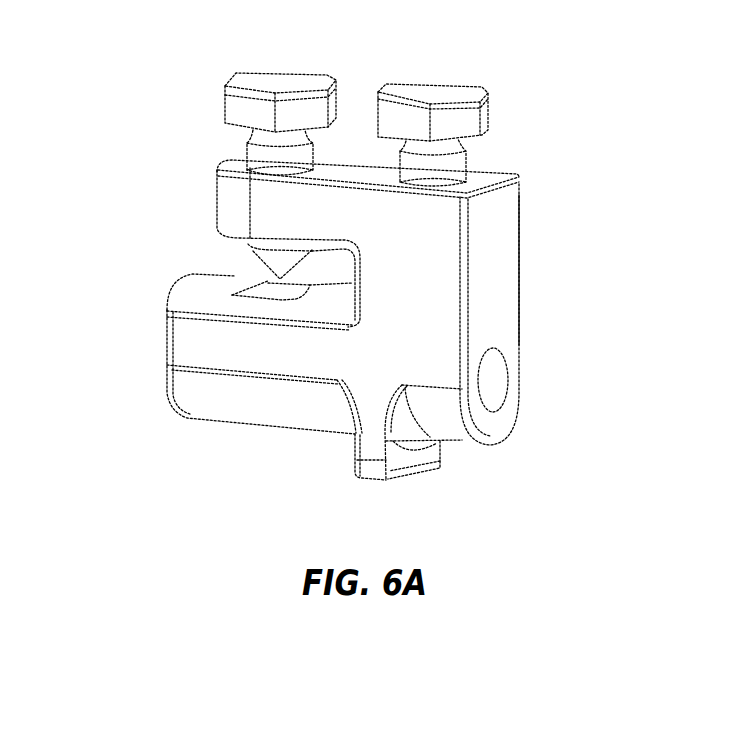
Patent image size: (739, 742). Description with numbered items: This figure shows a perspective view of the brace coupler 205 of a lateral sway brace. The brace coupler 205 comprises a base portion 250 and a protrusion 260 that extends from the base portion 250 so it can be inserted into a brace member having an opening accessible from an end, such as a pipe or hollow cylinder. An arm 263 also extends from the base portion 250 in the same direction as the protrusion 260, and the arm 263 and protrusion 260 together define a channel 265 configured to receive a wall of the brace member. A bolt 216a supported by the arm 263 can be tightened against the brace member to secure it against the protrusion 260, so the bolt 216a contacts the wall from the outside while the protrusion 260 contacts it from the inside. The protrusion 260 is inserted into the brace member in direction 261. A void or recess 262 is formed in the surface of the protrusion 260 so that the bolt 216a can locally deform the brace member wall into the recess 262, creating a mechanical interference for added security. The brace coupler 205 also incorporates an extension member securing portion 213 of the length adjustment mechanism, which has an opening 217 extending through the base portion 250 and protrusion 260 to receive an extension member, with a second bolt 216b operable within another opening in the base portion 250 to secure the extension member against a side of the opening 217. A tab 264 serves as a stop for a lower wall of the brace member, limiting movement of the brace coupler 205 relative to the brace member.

The brace coupler 205 is at (128, 75).
The bolt 216a is at (277, 71).
The bolt 216b is at (427, 82).
The arm 263 is at (217, 199).
The channel 265 is at (211, 246).
The void or recess 262 is at (272, 289).
The protrusion 260 is at (165, 340).
The base portion 250 is at (492, 218).
The extension member securing portion 213 is at (545, 334).
The opening 217 is at (488, 380).
The direction 261 is at (297, 452).
The tab 264 is at (373, 481).